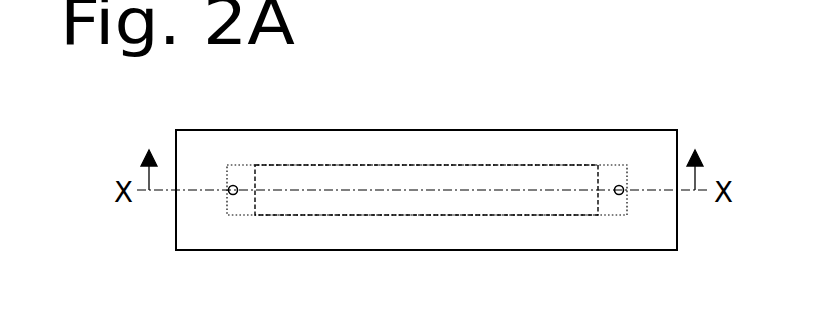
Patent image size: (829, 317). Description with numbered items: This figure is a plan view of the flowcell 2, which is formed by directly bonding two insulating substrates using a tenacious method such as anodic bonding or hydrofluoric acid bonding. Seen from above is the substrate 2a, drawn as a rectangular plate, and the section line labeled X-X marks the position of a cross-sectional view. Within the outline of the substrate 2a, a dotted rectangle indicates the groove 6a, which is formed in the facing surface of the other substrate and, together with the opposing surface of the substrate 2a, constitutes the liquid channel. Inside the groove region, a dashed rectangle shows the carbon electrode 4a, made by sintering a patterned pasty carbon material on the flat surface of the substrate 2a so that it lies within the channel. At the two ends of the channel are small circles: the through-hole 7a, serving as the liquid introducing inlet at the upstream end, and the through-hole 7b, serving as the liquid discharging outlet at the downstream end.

The flowcell 2 is at (677, 130).
The substrate 2a is at (652, 232).
The carbon electrode 4a is at (476, 165).
The groove 6a is at (242, 165).
The through-hole 7a is at (229, 185).
The through-hole 7b is at (619, 185).